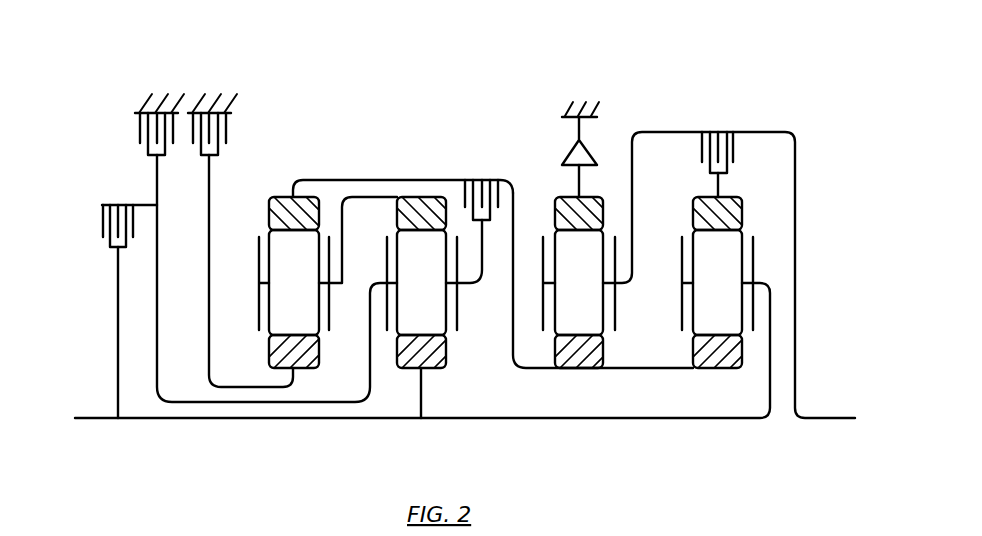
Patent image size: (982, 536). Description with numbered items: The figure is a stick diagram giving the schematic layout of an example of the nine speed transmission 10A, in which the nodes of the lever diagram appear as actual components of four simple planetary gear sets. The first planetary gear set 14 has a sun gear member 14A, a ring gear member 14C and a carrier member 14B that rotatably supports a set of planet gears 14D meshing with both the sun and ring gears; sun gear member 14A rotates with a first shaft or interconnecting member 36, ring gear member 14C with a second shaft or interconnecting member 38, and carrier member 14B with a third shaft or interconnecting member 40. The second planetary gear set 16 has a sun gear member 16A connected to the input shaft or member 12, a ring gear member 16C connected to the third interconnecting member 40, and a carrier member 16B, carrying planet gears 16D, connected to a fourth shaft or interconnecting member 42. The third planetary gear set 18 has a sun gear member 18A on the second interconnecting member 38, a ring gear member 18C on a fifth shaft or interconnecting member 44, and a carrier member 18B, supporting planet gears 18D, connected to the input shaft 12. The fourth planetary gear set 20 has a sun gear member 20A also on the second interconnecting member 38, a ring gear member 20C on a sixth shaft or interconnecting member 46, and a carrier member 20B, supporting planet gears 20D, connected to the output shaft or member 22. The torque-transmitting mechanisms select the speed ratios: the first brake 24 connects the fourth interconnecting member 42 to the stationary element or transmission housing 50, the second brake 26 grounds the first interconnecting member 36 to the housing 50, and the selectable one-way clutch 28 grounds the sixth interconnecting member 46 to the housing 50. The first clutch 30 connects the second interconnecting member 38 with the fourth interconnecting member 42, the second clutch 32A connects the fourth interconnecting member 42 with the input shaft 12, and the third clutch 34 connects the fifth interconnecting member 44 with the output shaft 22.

The nine speed transmission 10A is at (95, 116).
The input shaft or member 12 is at (92, 420).
The first planetary gear set 14 is at (292, 240).
The sun gear member 14A is at (280, 357).
The carrier member 14B is at (257, 262).
The ring gear member 14C is at (277, 212).
The planet gears 14D is at (300, 302).
The second planetary gear set 16 is at (429, 251).
The sun gear member 16A is at (425, 357).
The carrier member 16B is at (383, 267).
The ring gear member 16C is at (412, 200).
The planet gears 16D is at (435, 313).
The third planetary gear set 18 is at (743, 232).
The sun gear member 18A is at (717, 362).
The carrier member 18B is at (681, 261).
The ring gear member 18C is at (730, 208).
The planet gears 18D is at (717, 307).
The fourth planetary gear set 20 is at (612, 251).
The sun gear member 20A is at (578, 362).
The carrier member 20B is at (617, 297).
The ring gear member 20C is at (588, 207).
The planet gears 20D is at (600, 318).
The output shaft or member 22 is at (795, 193).
The first brake 24 is at (151, 77).
The second brake 26 is at (227, 76).
The selectable one-way clutch 28 is at (548, 112).
The first clutch 30 is at (495, 165).
The second clutch 32A is at (86, 216).
The third clutch 34 is at (734, 114).
The first shaft or interconnecting member 36 is at (208, 277).
The second shaft or interconnecting member 38 is at (514, 257).
The third shaft or interconnecting member 40 is at (377, 196).
The fourth shaft or interconnecting member 42 is at (157, 270).
The fifth shaft or interconnecting member 44 is at (717, 185).
The sixth shaft or interconnecting member 46 is at (575, 182).
The stationary element or transmission housing 50 is at (210, 98).